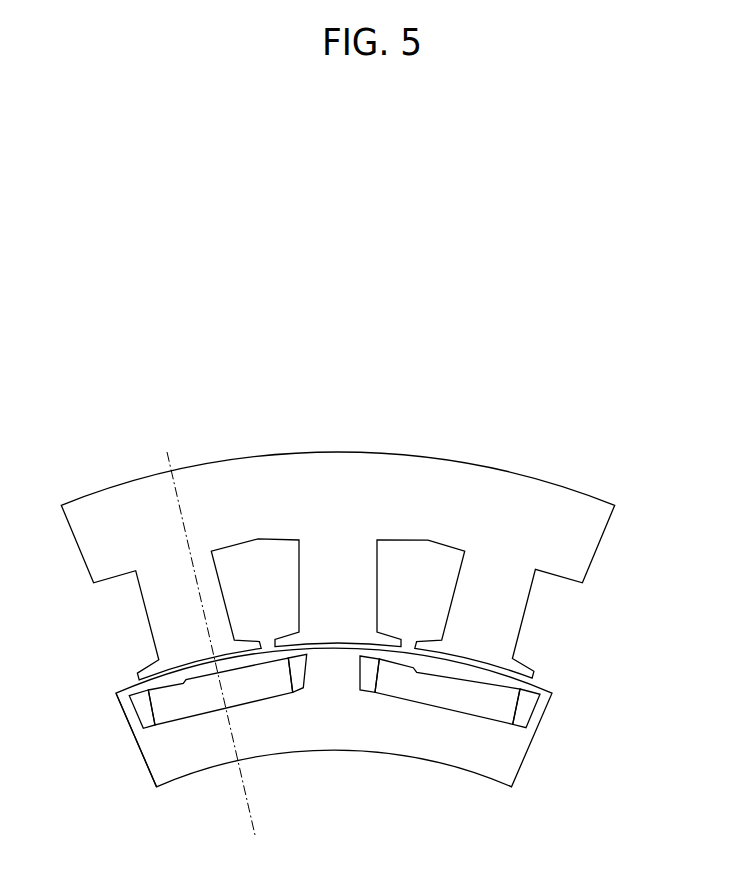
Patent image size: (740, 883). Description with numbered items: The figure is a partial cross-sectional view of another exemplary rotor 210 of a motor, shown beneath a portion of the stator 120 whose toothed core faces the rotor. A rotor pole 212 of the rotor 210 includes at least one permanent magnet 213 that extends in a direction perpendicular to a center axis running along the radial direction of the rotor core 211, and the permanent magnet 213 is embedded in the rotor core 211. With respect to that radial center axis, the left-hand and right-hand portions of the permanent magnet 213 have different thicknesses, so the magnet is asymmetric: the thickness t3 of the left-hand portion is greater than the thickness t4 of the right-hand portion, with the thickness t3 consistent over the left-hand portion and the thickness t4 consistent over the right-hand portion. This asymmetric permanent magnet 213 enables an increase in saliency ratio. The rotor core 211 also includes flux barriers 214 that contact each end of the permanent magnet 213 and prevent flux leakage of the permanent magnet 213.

The stator 120 is at (565, 495).
The rotor 210 is at (338, 716).
The rotor core 211 is at (407, 743).
The rotor pole 212 is at (155, 735).
The permanent magnet 213 is at (252, 697).
The flux barrier 214 is at (140, 703).
The thickness of the left-hand portion of the permanent magnet t3 is at (166, 648).
The thickness of the right-hand portion of the permanent magnet t4 is at (262, 625).